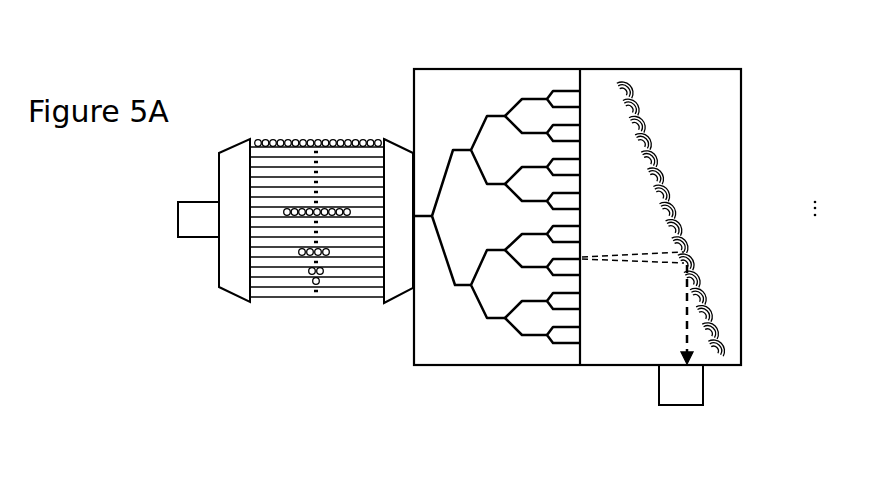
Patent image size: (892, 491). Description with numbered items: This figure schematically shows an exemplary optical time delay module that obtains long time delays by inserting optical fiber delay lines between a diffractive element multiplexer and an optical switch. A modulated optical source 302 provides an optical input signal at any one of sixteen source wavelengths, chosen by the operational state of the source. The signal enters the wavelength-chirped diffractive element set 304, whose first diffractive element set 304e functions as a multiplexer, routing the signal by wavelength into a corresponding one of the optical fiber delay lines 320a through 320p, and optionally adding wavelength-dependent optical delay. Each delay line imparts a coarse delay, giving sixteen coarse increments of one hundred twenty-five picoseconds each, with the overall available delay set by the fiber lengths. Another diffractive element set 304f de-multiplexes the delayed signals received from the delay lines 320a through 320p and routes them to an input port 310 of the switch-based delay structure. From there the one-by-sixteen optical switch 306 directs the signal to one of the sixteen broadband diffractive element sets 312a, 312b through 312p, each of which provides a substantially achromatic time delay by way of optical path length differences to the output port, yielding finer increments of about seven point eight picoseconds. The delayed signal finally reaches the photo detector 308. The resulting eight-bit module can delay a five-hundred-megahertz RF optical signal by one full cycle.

The optical source 302 is at (195, 223).
The wavelength-chirped diffractive element set 304 is at (228, 489).
The first diffractive element set 304e is at (231, 293).
The second diffractive element set 304f is at (400, 167).
The optical switch 306 is at (494, 270).
The photo detector 308 is at (682, 387).
The input port 310 is at (418, 213).
The broadband diffractive element set 312a is at (728, 343).
The broadband diffractive element set 312b is at (723, 325).
The broadband diffractive element set 312p is at (635, 90).
The optical fiber delay line 320a is at (289, 297).
The optical fiber delay line 320p is at (362, 150).